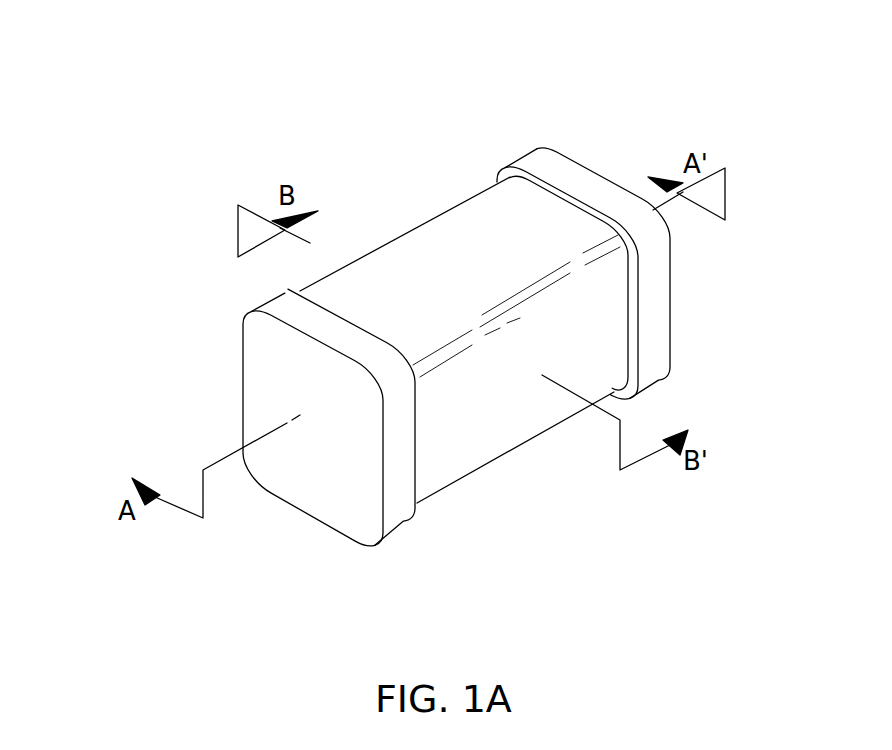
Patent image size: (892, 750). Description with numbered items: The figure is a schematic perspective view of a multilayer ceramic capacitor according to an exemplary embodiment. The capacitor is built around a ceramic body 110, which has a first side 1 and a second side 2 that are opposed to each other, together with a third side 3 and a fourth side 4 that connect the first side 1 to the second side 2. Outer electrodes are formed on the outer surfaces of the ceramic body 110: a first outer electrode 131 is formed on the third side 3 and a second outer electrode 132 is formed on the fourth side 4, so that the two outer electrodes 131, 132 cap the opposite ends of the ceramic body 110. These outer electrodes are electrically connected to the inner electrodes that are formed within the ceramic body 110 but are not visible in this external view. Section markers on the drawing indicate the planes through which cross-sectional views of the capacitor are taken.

The first side 1 is at (395, 200).
The second side 2 is at (512, 415).
The ceramic body 110 is at (450, 210).
The third side 3 is at (322, 469).
The fourth side 4 is at (582, 153).
The first outer electrode 131 is at (397, 513).
The second outer electrode 132 is at (650, 340).